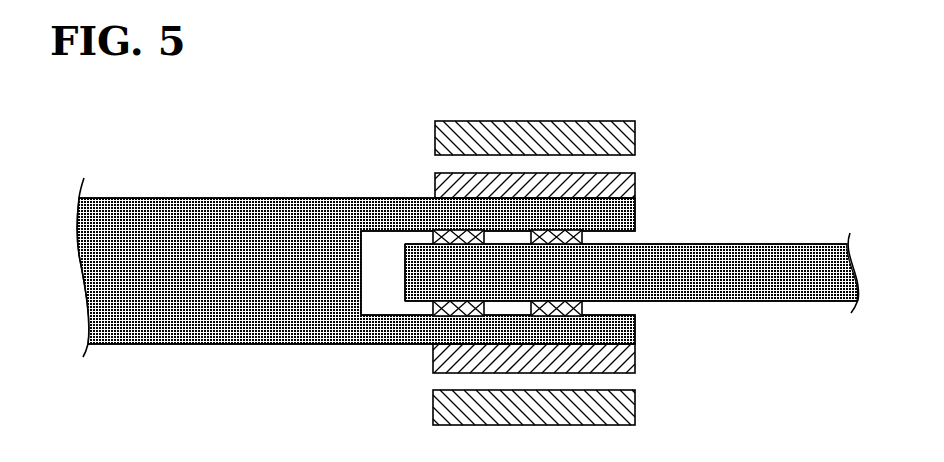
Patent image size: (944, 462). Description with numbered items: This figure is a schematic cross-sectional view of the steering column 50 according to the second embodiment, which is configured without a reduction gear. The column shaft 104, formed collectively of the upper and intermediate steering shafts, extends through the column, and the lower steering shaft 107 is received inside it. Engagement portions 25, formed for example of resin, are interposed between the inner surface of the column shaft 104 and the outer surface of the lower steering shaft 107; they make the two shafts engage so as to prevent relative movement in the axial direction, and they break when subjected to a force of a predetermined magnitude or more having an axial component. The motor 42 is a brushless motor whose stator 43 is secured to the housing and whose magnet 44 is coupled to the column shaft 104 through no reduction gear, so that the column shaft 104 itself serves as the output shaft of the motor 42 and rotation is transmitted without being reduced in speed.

The steering column 50 is at (226, 139).
The column shaft 104 is at (92, 232).
The lower steering shaft 107 is at (823, 252).
The motor 42 is at (697, 97).
The stator 43 is at (620, 141).
The magnet 44 is at (620, 195).
The engagement portions 25 is at (573, 308).